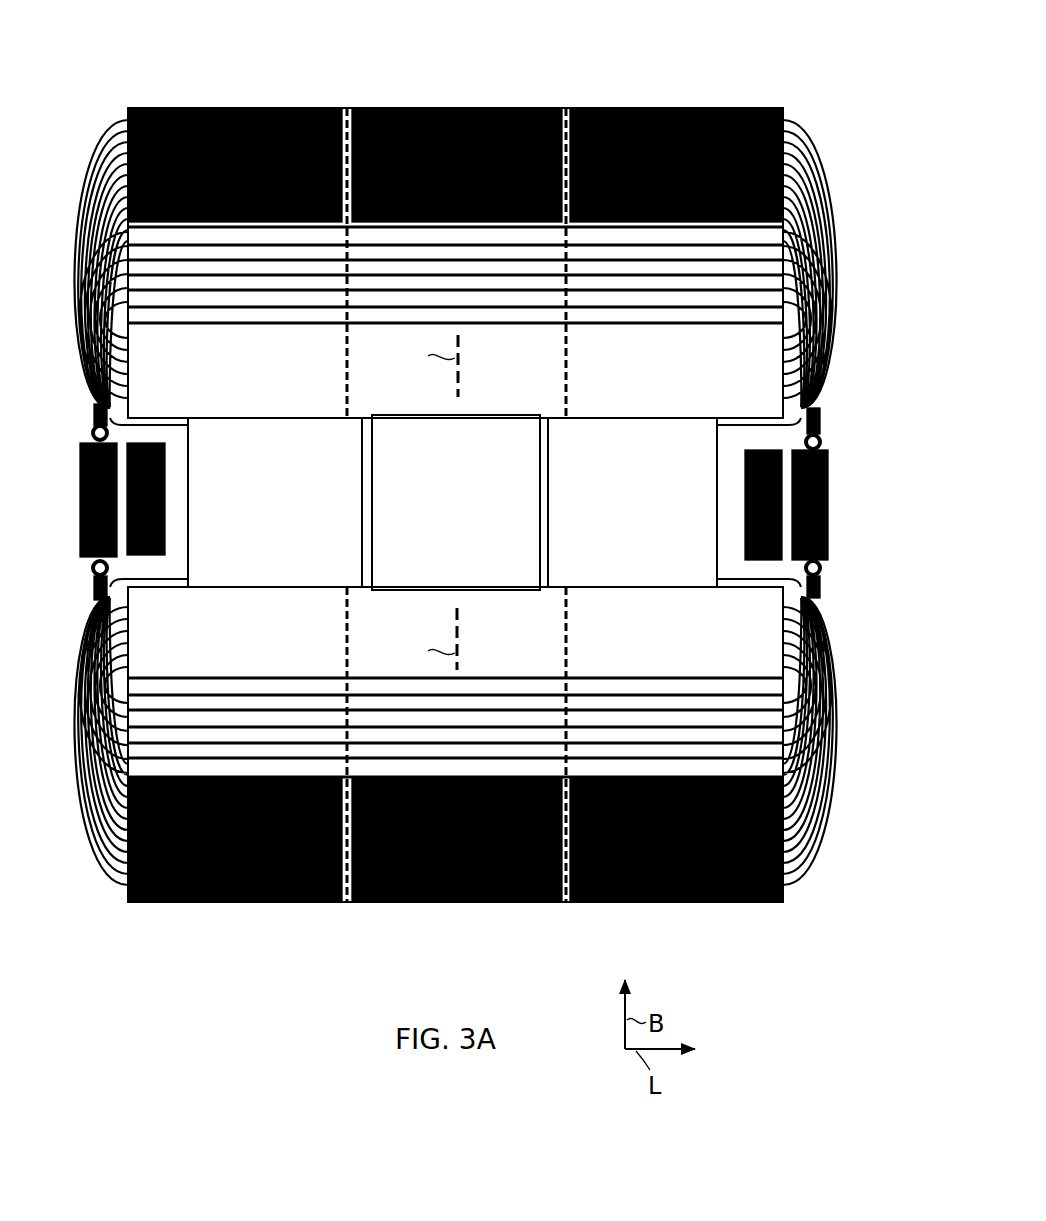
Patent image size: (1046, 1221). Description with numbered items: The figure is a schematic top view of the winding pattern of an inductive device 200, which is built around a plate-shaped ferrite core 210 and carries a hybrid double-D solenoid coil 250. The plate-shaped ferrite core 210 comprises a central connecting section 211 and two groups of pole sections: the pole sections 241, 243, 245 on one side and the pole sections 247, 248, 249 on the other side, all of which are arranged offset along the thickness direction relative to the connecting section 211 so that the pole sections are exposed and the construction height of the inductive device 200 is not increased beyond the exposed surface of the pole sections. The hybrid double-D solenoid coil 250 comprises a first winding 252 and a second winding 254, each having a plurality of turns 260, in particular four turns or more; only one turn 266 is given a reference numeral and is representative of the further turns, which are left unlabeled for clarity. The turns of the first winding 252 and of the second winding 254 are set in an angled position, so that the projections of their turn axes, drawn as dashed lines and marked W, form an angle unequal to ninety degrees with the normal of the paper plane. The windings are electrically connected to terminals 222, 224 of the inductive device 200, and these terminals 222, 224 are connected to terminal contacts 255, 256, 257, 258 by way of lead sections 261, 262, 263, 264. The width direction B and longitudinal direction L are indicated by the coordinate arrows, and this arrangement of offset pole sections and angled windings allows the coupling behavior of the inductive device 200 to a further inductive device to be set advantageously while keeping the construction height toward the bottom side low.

The inductive device 200 is at (133, 60).
The plate-shaped ferrite core 210 is at (180, 564).
The connecting section 211 is at (726, 568).
The terminal 222 is at (842, 508).
The terminal 224 is at (68, 507).
The pole section 241 is at (682, 108).
The pole section 243 is at (462, 108).
The pole section 245 is at (244, 108).
The pole section 247 is at (676, 905).
The pole section 248 is at (460, 903).
The pole section 249 is at (240, 903).
The hybrid double-D solenoid coil 250 is at (74, 909).
The first winding 252 is at (58, 757).
The second winding 254 is at (60, 245).
The terminal contact 255 is at (822, 432).
The terminal contact 256 is at (90, 433).
The terminal contact 257 is at (822, 580).
The terminal contact 258 is at (90, 568).
The turns 260 is at (832, 912).
The lead section 261 is at (833, 375).
The lead section 262 is at (76, 370).
The lead section 263 is at (823, 645).
The lead section 264 is at (85, 640).
The turn 266 is at (818, 872).